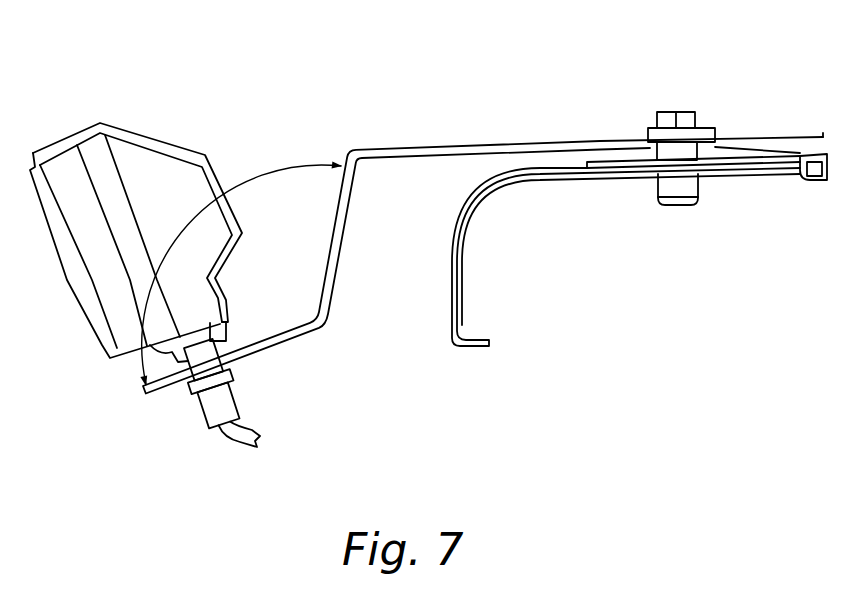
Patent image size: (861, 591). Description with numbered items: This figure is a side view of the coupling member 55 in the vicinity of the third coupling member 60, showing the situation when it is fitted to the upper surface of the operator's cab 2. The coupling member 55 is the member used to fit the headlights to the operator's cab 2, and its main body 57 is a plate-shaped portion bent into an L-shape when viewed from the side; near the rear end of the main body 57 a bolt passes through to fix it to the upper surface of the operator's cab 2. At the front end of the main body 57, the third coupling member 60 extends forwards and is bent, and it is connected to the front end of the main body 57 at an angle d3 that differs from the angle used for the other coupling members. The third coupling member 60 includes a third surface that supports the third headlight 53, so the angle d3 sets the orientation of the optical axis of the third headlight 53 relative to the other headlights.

The operator's cab 2 is at (765, 138).
The third headlight 53 is at (125, 130).
The coupling member 55 is at (327, 95).
The main body 57 is at (375, 151).
The third coupling member 60 is at (158, 388).
The angle d3 is at (241, 257).